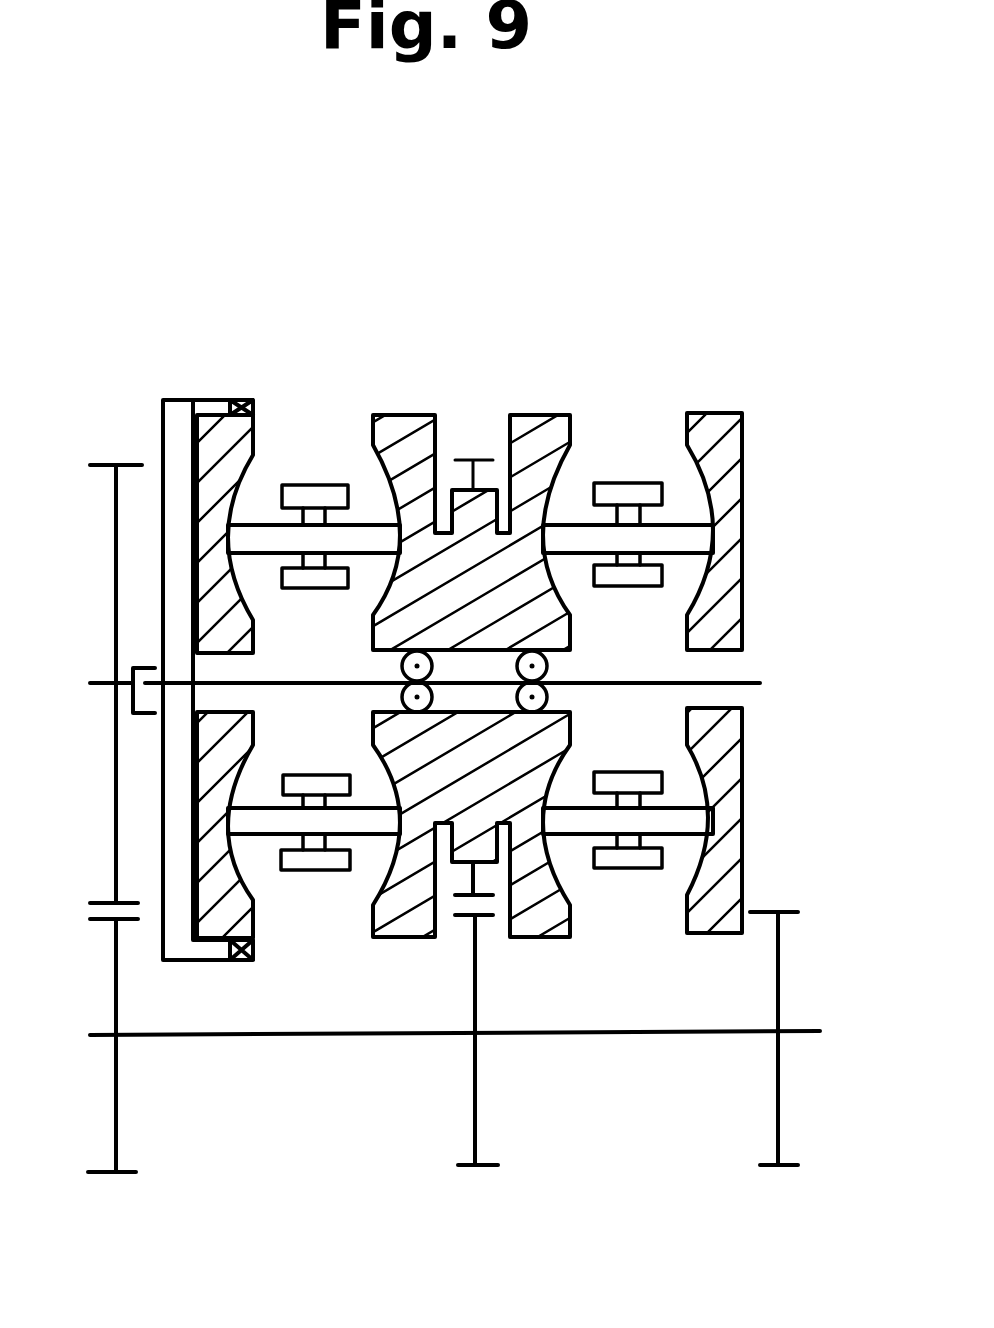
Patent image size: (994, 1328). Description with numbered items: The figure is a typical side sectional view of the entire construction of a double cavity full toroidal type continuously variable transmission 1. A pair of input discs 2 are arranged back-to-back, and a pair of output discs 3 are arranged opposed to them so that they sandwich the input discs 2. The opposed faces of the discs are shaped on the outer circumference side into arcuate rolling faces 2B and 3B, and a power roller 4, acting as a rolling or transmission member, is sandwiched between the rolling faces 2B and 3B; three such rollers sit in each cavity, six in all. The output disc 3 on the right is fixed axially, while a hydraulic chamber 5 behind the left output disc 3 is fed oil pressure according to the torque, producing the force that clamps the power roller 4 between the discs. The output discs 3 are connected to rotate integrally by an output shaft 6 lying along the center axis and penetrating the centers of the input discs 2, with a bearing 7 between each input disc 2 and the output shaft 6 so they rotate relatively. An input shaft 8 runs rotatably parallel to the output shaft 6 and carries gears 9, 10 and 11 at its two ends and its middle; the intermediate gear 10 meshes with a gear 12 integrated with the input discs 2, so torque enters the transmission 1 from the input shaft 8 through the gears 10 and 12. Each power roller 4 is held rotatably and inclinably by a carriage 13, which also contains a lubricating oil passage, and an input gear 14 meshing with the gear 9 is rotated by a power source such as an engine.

The toroidal type continuously variable transmission 1 is at (464, 256).
The input disc 2 is at (404, 415).
The rolling face 2B is at (572, 475).
The output disc 3 is at (218, 425).
The rolling face 3B is at (242, 782).
The power roller 4 is at (258, 540).
The hydraulic chamber 5 is at (183, 535).
The output shaft 6 is at (600, 683).
The bearing 7 is at (403, 693).
The input shaft 8 is at (583, 1036).
The gear 9 is at (116, 1174).
The gear 10 is at (468, 1170).
The gear 11 is at (792, 1170).
The gear 12 is at (498, 875).
The carriage 13 is at (315, 490).
The input gear 14 is at (116, 463).